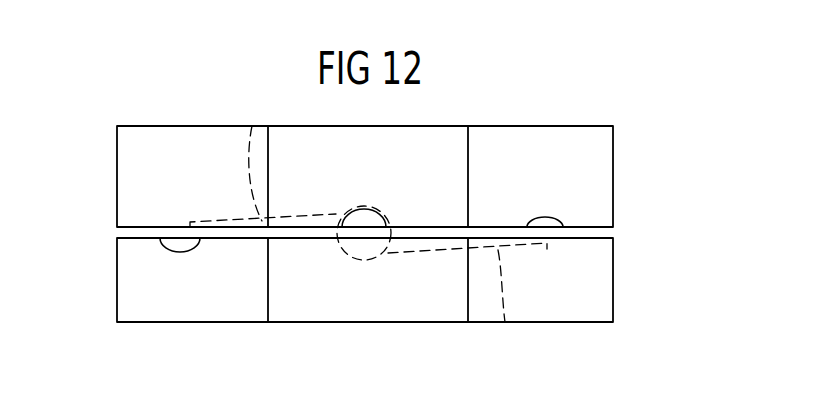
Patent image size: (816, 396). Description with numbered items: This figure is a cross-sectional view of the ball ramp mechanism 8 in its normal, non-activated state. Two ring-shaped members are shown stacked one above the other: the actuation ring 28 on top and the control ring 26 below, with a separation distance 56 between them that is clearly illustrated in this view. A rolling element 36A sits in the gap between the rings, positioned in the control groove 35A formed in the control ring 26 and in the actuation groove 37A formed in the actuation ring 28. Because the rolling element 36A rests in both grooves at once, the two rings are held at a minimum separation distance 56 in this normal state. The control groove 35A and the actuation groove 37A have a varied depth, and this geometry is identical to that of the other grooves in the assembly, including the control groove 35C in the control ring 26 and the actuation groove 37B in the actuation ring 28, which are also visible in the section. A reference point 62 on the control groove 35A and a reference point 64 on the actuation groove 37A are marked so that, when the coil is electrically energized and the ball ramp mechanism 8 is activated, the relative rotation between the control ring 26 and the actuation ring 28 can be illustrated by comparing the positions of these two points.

The ball ramp mechanism 8 is at (605, 90).
The control ring 26 is at (603, 278).
The actuation ring 28 is at (600, 160).
The control groove 35A is at (505, 322).
The control groove 35C is at (162, 246).
The rolling element 36A is at (346, 236).
The actuation groove 37A is at (252, 126).
The actuation groove 37B is at (558, 218).
The separation distance 56 is at (612, 232).
The reference point 62 is at (370, 259).
The reference point 64 is at (366, 212).